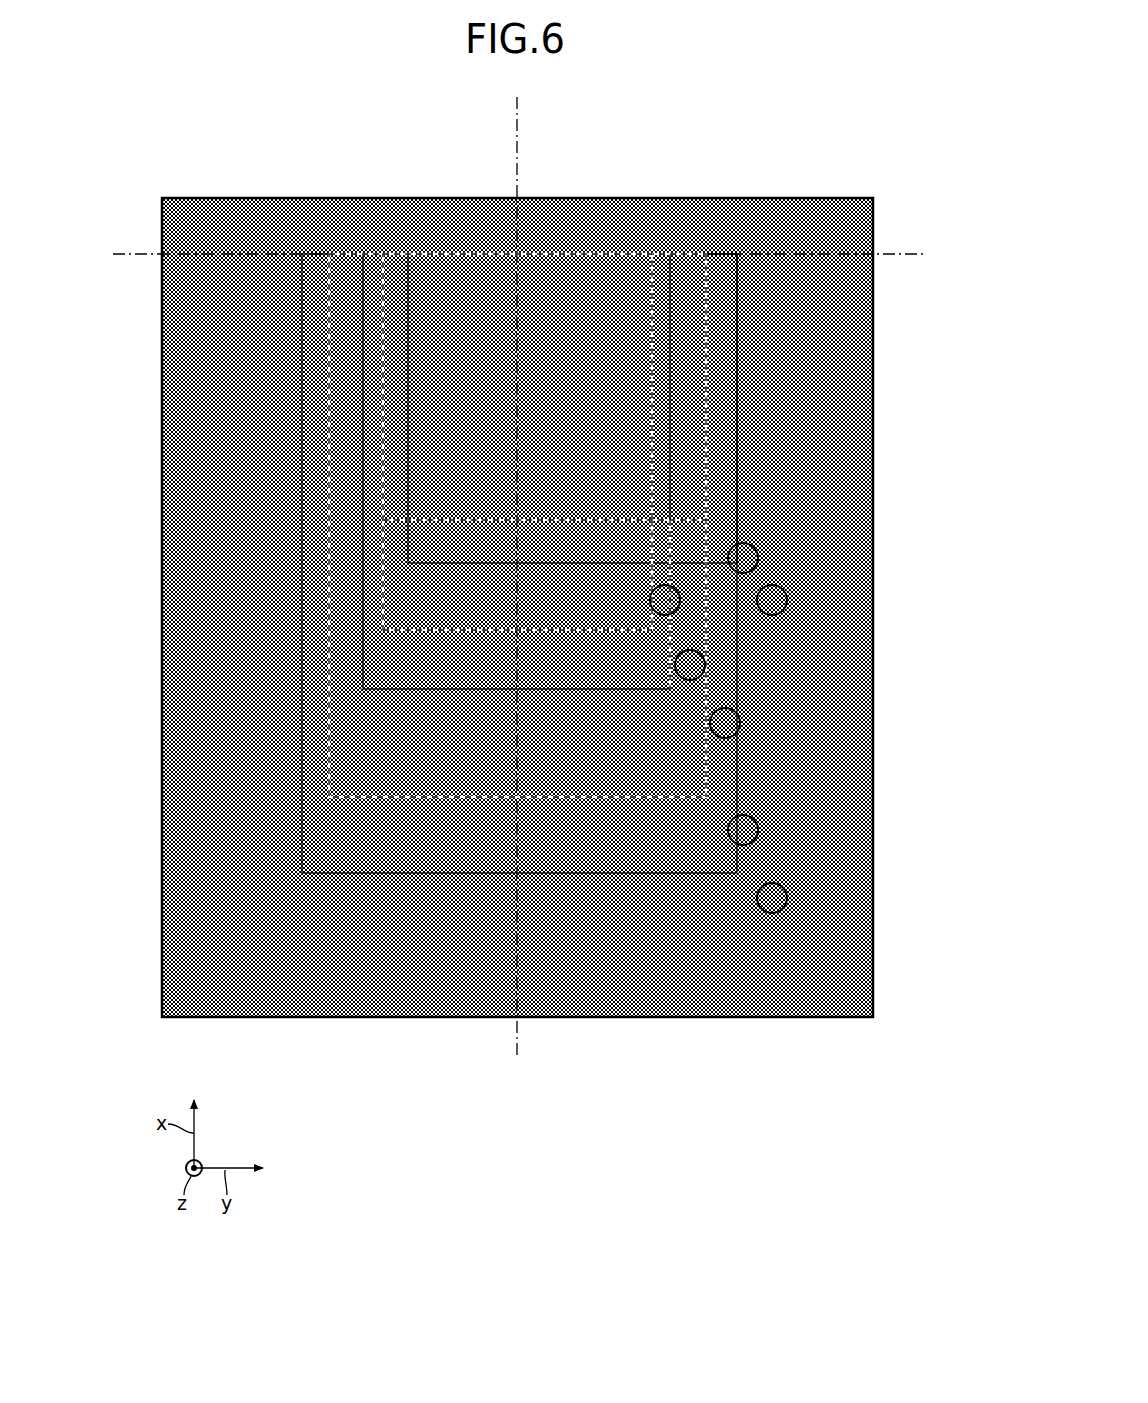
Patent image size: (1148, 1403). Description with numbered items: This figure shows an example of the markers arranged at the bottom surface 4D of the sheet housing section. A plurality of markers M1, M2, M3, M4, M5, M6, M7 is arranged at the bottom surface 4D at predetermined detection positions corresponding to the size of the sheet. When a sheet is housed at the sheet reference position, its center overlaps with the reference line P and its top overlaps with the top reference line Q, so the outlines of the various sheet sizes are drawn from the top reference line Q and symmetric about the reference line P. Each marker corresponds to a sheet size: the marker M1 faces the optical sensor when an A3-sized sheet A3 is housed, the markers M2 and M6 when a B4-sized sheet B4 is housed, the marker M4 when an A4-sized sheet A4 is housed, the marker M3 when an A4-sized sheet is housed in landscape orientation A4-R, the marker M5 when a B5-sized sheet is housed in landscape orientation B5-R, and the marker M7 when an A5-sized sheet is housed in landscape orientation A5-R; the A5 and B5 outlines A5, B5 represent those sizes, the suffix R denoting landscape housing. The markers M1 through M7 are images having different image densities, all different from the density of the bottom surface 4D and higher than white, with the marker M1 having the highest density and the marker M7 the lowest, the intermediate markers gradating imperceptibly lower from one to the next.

The bottom surface 4D is at (740, 236).
The reference line P is at (519, 165).
The top reference line Q is at (146, 251).
The A3-sized sheet A3 is at (648, 870).
The A4-sized sheet A4 is at (732, 463).
The A5-sized sheet A5 is at (572, 408).
The B4-sized sheet B4 is at (622, 792).
The B5-sized sheet B5 is at (701, 443).
The A4-sized sheet in landscape orientation A4-R is at (559, 688).
The A5-sized sheet in landscape orientation A5-R is at (619, 482).
The B5-sized sheet in landscape orientation B5-R is at (645, 556).
The marker M1 is at (787, 895).
The marker M2 is at (758, 828).
The marker M3 is at (740, 720).
The marker M4 is at (782, 590).
The marker M5 is at (705, 664).
The marker M6 is at (753, 548).
The marker M7 is at (680, 602).